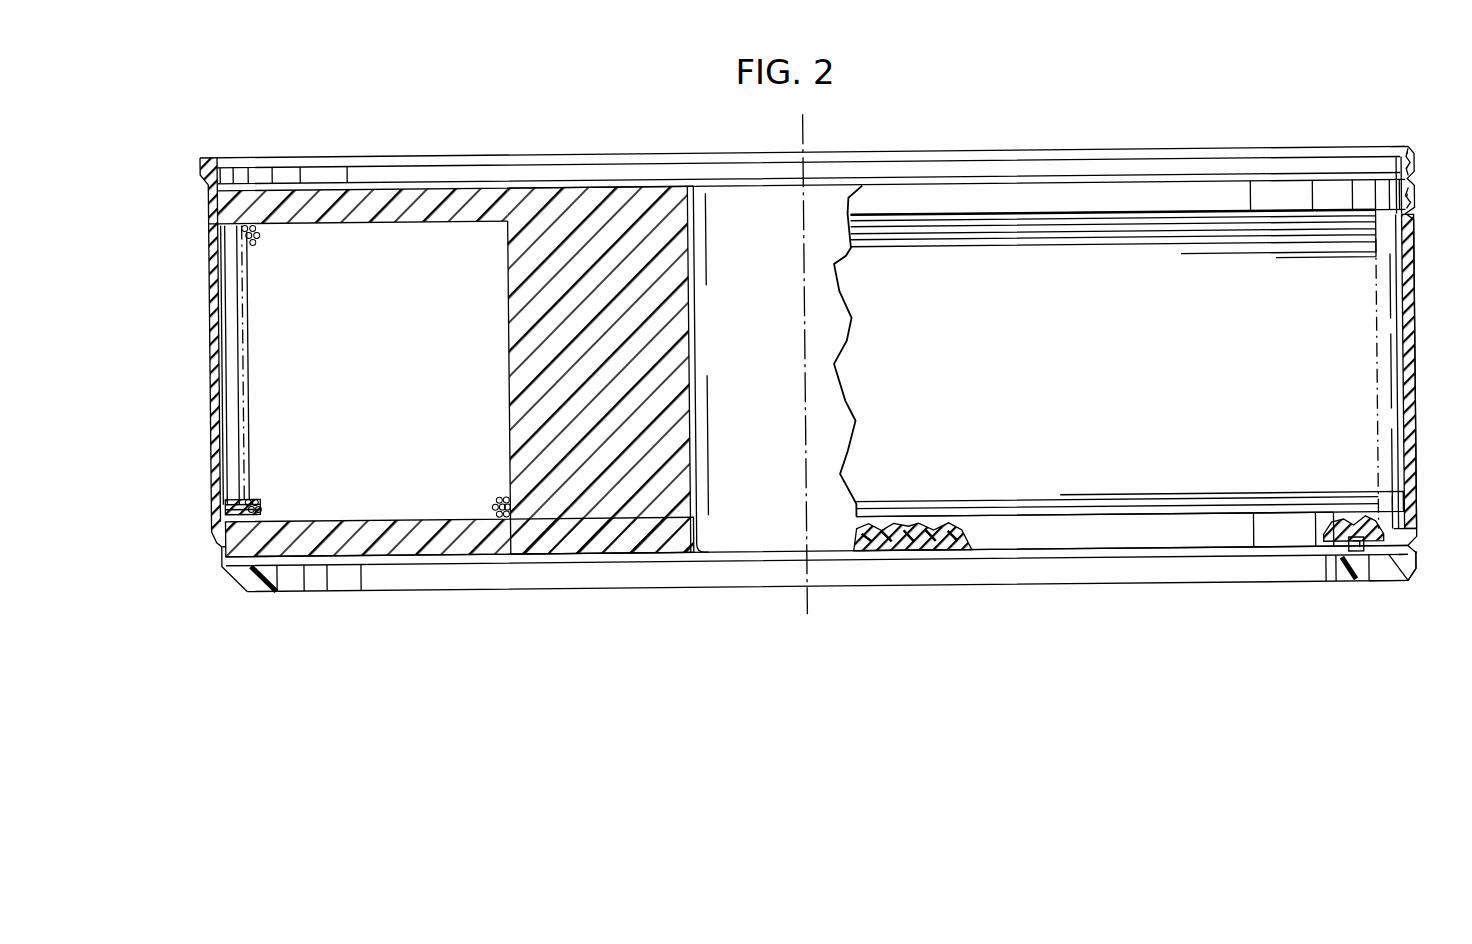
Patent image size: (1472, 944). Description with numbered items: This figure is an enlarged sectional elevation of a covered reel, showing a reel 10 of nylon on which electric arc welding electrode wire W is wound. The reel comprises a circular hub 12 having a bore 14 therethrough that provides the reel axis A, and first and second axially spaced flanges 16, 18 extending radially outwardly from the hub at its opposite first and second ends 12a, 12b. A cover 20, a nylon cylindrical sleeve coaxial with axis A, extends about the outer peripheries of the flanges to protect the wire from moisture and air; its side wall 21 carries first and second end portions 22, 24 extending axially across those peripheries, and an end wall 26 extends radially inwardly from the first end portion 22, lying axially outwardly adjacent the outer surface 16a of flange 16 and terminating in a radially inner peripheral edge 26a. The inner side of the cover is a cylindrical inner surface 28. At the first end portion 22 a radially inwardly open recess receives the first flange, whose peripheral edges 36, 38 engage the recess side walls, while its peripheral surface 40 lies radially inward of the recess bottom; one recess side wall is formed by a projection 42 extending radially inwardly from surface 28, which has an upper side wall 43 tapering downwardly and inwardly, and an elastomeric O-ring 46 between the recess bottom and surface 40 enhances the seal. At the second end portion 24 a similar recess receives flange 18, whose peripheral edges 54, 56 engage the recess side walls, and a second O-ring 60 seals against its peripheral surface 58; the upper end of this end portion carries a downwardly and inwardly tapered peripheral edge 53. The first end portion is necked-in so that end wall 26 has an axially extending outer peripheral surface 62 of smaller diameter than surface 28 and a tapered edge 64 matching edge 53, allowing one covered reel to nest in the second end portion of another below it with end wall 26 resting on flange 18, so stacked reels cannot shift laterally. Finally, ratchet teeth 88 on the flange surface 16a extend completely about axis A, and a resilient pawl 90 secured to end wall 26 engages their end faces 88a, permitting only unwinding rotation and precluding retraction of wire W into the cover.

The reel 10 is at (480, 563).
The circular hub 12 is at (645, 545).
The first end of hub 12a is at (595, 553).
The second end of hub 12b is at (605, 190).
The bore 14 is at (705, 557).
The first flange 16 is at (388, 553).
The axially outer surface of first flange 16a is at (1265, 545).
The second flange 18 is at (393, 190).
The cover 20 is at (208, 572).
The side wall 21 is at (1408, 378).
The first end portion 22 is at (198, 547).
The second end portion 24 is at (183, 215).
The end wall 26 is at (262, 590).
The radially inner peripheral edge 26a is at (1340, 580).
The cylindrical inner surface 28 is at (220, 351).
The peripheral edge of first flange 36 is at (1065, 548).
The peripheral edge of first flange 38 is at (1056, 513).
The peripheral surface of first flange 40 is at (1188, 533).
The projection 42 is at (1395, 503).
The upper side wall of projection 43 is at (230, 500).
The O-ring 46 is at (1405, 535).
The peripheral edge 53 is at (1400, 150).
The peripheral edge of second flange 54 is at (1148, 222).
The peripheral edge of second flange 56 is at (1070, 182).
The peripheral surface of second flange 58 is at (1120, 192).
The O-ring 60 is at (1405, 198).
The outer peripheral surface 62 is at (1392, 583).
The tapered edge 64 is at (1403, 563).
The ratchet teeth 88 is at (948, 548).
The end faces of ratchet teeth 88a is at (280, 523).
The pawl 90 is at (1349, 562).
The reel axis A is at (808, 610).
The electrode wire W is at (1213, 223).